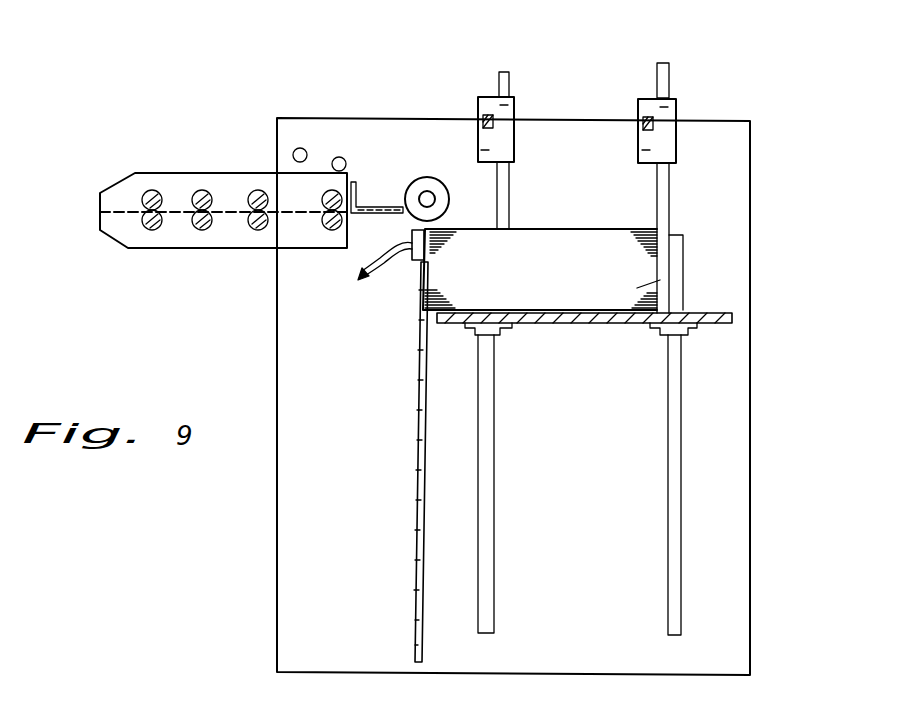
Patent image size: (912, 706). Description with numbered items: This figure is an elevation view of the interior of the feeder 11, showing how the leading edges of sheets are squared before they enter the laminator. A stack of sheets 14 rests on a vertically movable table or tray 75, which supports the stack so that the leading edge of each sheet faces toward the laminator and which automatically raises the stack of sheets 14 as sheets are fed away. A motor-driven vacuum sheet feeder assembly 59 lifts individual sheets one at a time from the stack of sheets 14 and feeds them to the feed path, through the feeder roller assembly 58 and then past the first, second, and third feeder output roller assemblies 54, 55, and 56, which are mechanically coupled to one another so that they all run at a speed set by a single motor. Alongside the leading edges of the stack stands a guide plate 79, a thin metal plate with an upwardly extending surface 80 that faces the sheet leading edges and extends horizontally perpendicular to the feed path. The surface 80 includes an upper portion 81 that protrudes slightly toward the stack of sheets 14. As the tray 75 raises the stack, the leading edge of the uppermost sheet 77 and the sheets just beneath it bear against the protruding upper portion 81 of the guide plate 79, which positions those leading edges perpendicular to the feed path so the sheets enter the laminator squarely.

The feeder 11 is at (753, 119).
The stack of sheets 14 is at (637, 288).
The first feeder output roller assembly 54 is at (258, 191).
The second feeder output roller assembly 55 is at (200, 190).
The third feeder output roller assembly 56 is at (150, 190).
The feeder roller assembly 58 is at (186, 188).
The vacuum sheet feeder assembly 59 is at (406, 180).
The tray 75 is at (717, 311).
The uppermost sheet 77 is at (552, 228).
The guide plate 79 is at (413, 397).
The upwardly extending surface 80 is at (430, 472).
The upper portion 81 is at (417, 267).